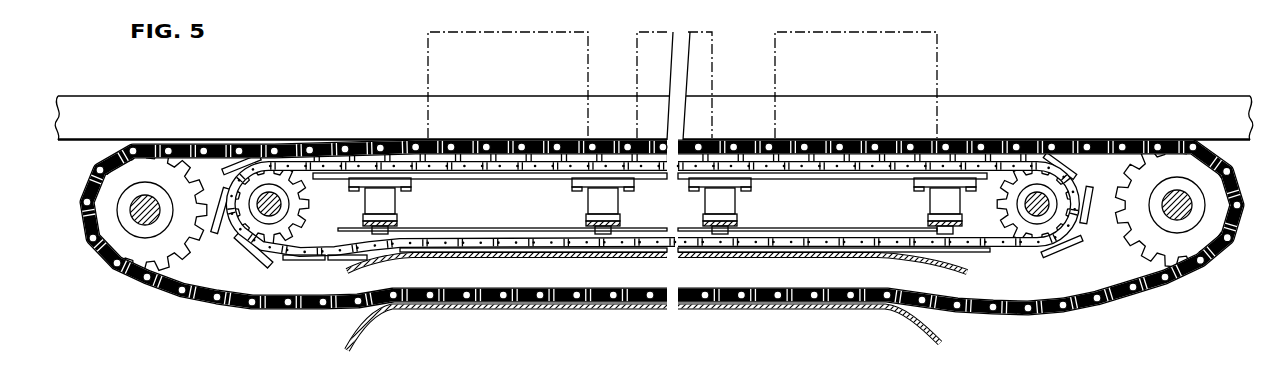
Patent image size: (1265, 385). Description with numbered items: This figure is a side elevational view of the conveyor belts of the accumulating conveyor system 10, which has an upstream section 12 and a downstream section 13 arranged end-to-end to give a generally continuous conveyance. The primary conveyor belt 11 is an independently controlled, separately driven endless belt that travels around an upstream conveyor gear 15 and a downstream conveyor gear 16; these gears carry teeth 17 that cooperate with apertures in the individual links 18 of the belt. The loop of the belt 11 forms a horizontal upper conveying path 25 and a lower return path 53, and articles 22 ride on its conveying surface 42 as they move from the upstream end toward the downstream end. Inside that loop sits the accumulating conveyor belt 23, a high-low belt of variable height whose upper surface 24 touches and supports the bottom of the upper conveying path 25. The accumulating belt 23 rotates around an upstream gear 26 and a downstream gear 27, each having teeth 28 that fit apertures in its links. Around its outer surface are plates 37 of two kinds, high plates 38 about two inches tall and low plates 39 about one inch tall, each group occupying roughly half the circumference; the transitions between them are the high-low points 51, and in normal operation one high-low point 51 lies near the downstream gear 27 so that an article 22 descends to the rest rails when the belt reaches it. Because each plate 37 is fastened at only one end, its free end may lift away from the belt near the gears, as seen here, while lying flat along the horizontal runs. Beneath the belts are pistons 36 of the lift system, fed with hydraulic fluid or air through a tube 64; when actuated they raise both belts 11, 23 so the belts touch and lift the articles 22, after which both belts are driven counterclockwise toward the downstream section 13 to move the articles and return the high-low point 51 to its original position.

The accumulating conveyor system 10 is at (1057, 46).
The primary conveyor belt 11 is at (1122, 300).
The upstream section 12 is at (1023, 128).
The downstream section 13 is at (283, 150).
The upstream conveyor gear 15 is at (1185, 243).
The downstream conveyor gear 16 is at (121, 236).
The teeth 17 is at (213, 231).
The links 18 is at (143, 279).
The articles 22 is at (462, 42).
The accumulating conveyor belt 23 is at (607, 256).
The upper surface 24 is at (382, 168).
The upper conveying path 25 is at (322, 150).
The upstream gear 26 is at (1031, 232).
The downstream gear 27 is at (279, 236).
The teeth 28 is at (1000, 181).
The pistons 36 is at (396, 204).
The plates 37 is at (812, 163).
The high plates 38 is at (771, 162).
The low plates 39 is at (333, 148).
The conveying surface 42 is at (459, 136).
The high-low point 51 is at (410, 147).
The lower return path 53 is at (1014, 311).
The tube 64 is at (468, 230).